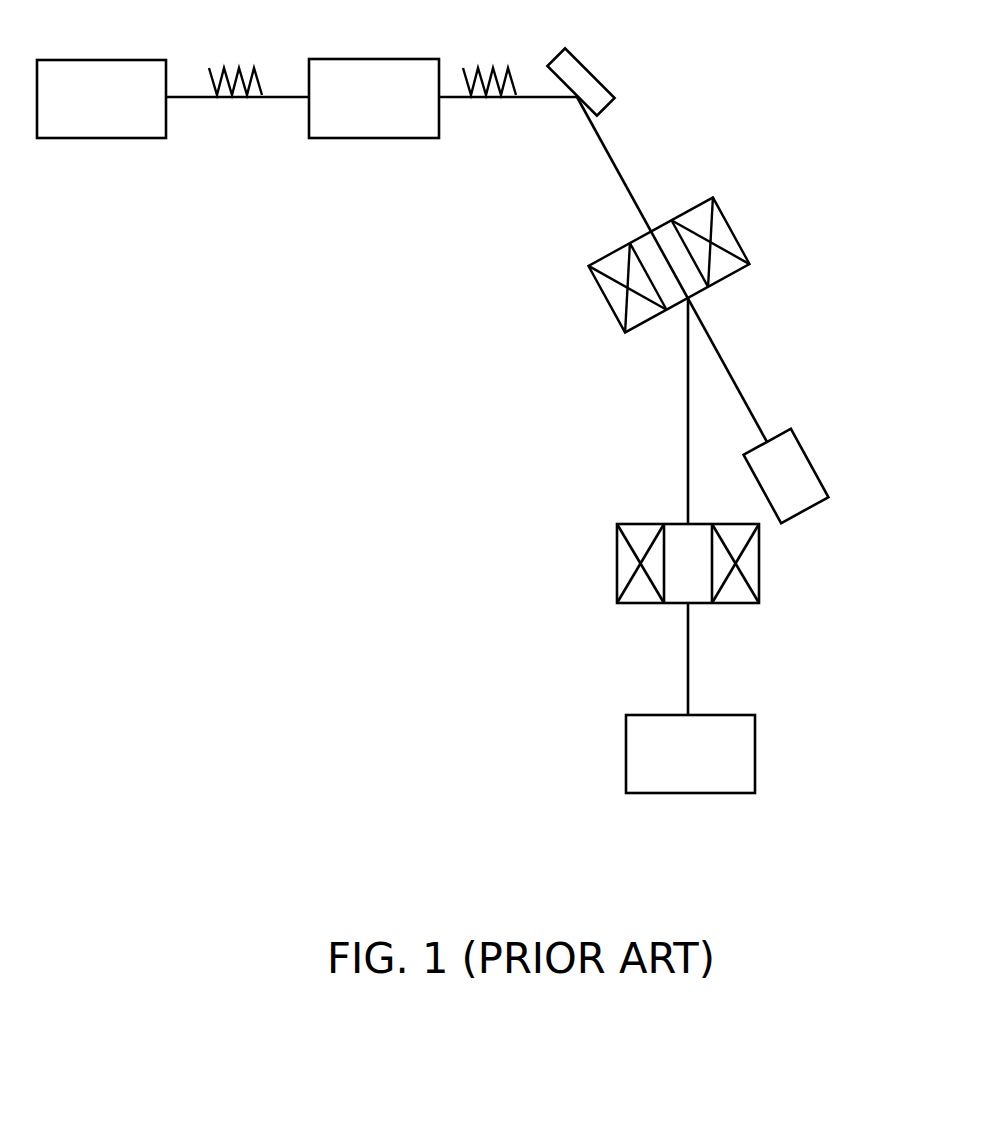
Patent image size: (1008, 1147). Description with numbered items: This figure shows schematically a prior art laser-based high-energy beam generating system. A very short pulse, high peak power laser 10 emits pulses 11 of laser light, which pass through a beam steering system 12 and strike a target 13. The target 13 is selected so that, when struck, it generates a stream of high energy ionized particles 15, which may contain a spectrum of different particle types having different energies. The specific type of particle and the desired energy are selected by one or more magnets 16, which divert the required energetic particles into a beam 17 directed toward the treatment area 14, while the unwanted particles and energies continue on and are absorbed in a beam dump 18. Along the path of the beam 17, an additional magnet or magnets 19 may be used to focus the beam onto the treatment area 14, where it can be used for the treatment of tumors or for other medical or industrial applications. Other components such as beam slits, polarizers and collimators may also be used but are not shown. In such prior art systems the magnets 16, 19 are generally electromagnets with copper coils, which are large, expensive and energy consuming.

The high peak power laser 10 is at (106, 140).
The pulses of laser light 11 is at (233, 67).
The beam steering system 12 is at (378, 139).
The target 13 is at (593, 70).
The treatment area 14 is at (626, 750).
The stream of high energy ionized particles 15 is at (612, 162).
The magnets 16 is at (730, 227).
The beam 17 is at (687, 413).
The beam dump 18 is at (813, 458).
The additional magnets 19 is at (617, 557).